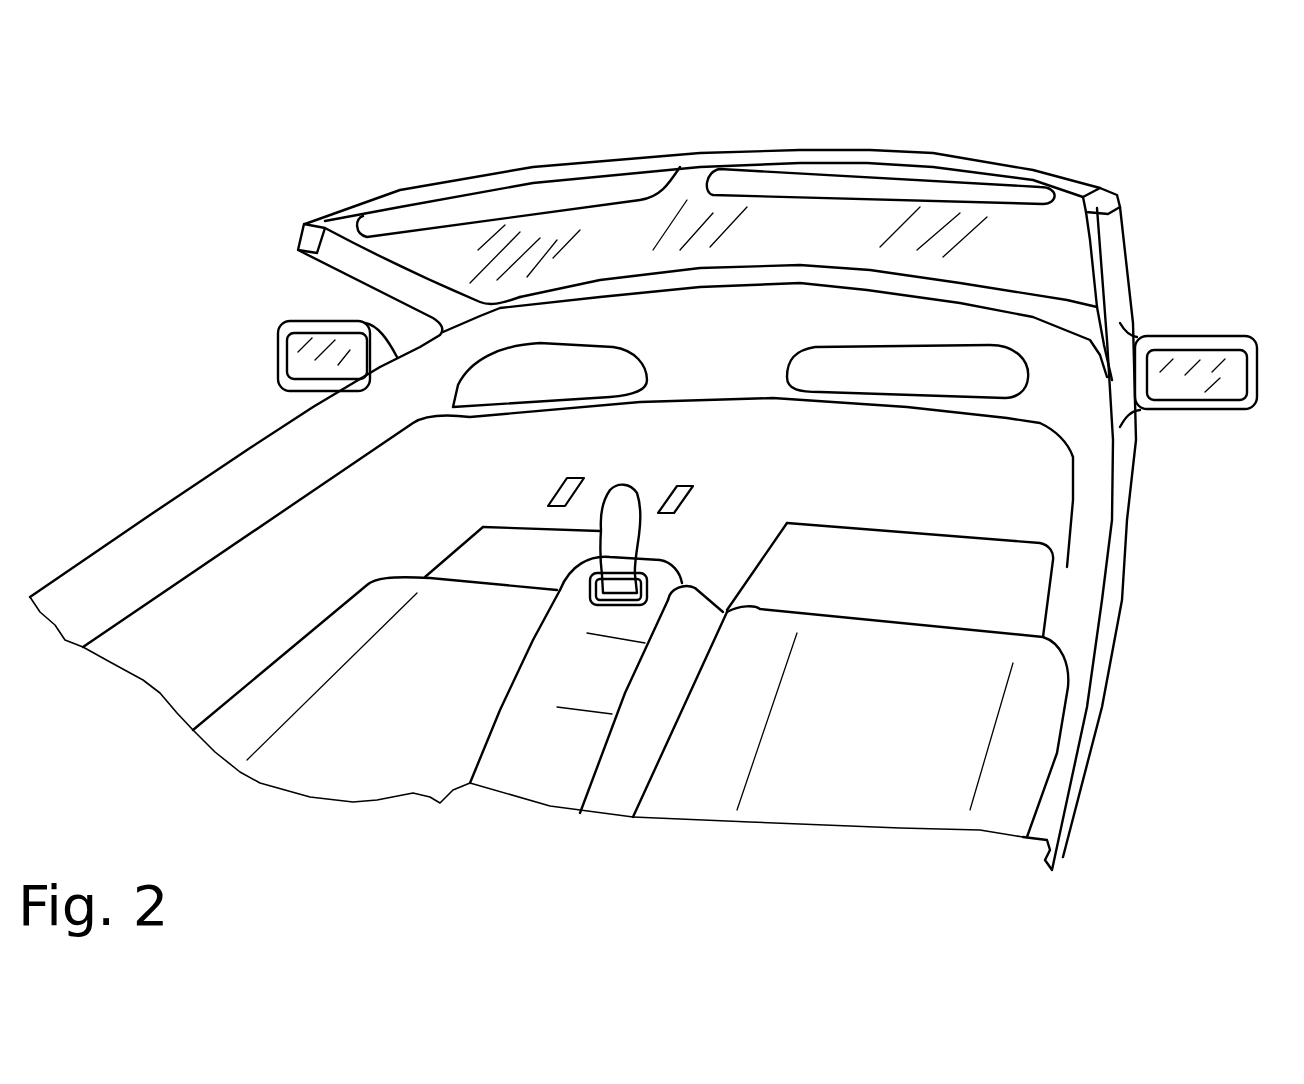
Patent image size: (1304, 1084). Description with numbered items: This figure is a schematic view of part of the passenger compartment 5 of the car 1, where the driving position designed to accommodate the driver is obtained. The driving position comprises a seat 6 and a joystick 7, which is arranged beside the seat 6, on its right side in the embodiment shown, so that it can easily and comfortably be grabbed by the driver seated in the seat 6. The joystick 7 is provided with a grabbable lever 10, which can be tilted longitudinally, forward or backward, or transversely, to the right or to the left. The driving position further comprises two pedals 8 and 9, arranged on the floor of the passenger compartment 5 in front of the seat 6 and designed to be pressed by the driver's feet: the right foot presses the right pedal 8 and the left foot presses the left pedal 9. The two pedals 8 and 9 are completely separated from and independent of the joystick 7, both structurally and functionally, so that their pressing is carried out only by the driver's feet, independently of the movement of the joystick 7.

The car 1 is at (662, 565).
The passenger compartment 5 is at (412, 148).
The seat 6 is at (390, 697).
The joystick 7 is at (654, 473).
The right pedal 8 is at (680, 496).
The left pedal 9 is at (556, 490).
The grabbable lever 10 is at (621, 503).